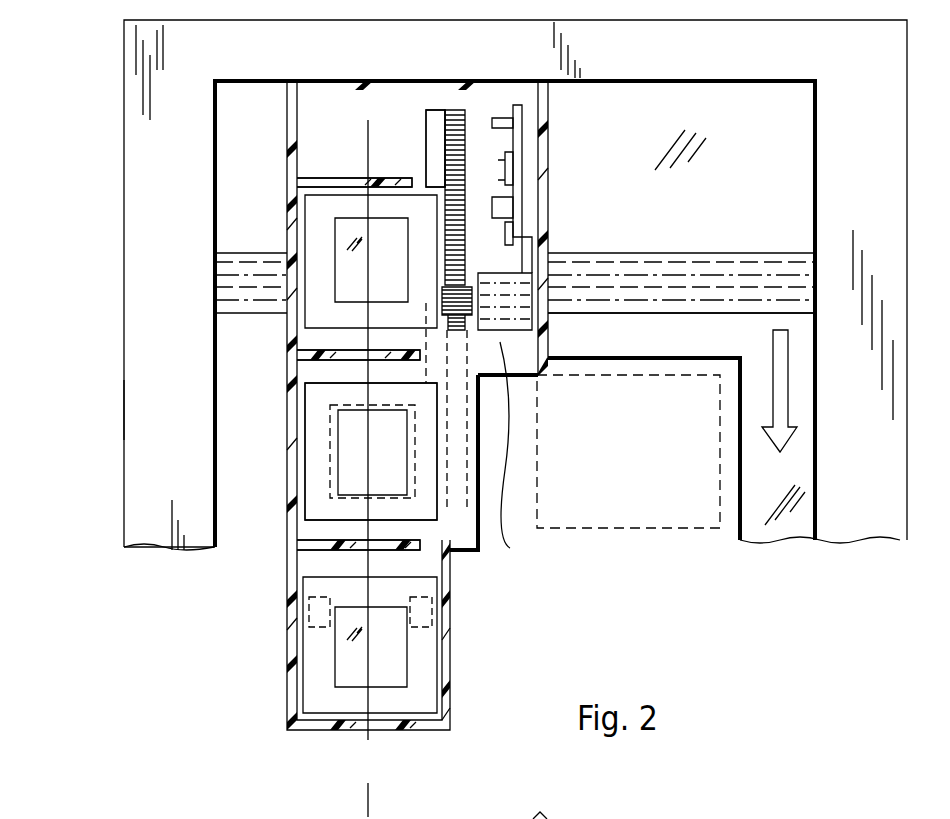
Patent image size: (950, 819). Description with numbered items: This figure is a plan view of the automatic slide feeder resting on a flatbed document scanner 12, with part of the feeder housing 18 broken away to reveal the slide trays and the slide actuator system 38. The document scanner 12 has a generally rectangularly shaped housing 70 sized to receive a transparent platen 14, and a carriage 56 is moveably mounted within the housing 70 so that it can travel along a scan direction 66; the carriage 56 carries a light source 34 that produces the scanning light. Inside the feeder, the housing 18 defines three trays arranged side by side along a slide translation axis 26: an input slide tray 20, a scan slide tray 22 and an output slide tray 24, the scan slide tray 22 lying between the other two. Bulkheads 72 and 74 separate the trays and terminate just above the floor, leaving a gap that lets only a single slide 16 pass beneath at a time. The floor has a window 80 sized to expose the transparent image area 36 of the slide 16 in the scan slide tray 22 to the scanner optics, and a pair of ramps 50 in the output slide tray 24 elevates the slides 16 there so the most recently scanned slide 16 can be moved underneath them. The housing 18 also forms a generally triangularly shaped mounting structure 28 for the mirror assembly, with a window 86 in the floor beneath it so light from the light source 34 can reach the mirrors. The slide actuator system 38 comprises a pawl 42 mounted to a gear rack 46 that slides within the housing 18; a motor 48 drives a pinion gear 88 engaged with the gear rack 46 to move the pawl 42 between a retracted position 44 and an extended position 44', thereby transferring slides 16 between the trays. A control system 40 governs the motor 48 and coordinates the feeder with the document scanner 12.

The document scanner 12 is at (117, 157).
The transparent platen 14 is at (222, 548).
The slide 16 is at (305, 218).
The housing 18 is at (558, 119).
The input slide tray 20 is at (287, 156).
The scan slide tray 22 is at (290, 440).
The output slide tray 24 is at (297, 660).
The slide translation axis 26 is at (368, 772).
The mounting structure 28 is at (673, 471).
The light source 34 is at (770, 300).
The transparent image area 36 is at (388, 468).
The slide actuator system 38 is at (506, 344).
The control system 40 is at (533, 169).
The pawl 42 is at (441, 100).
The retracted position 44 is at (411, 144).
The extended position 44' is at (334, 343).
The gear rack 46 is at (463, 108).
The motor 48 is at (527, 326).
The ramps 50 is at (309, 612).
The carriage 56 is at (776, 243).
The scan direction 66 is at (788, 392).
The housing 70 is at (124, 406).
The bulkhead 72 is at (312, 354).
The bulkhead 74 is at (320, 541).
The window 80 is at (330, 472).
The window 86 is at (478, 458).
The pinion gear 88 is at (440, 297).